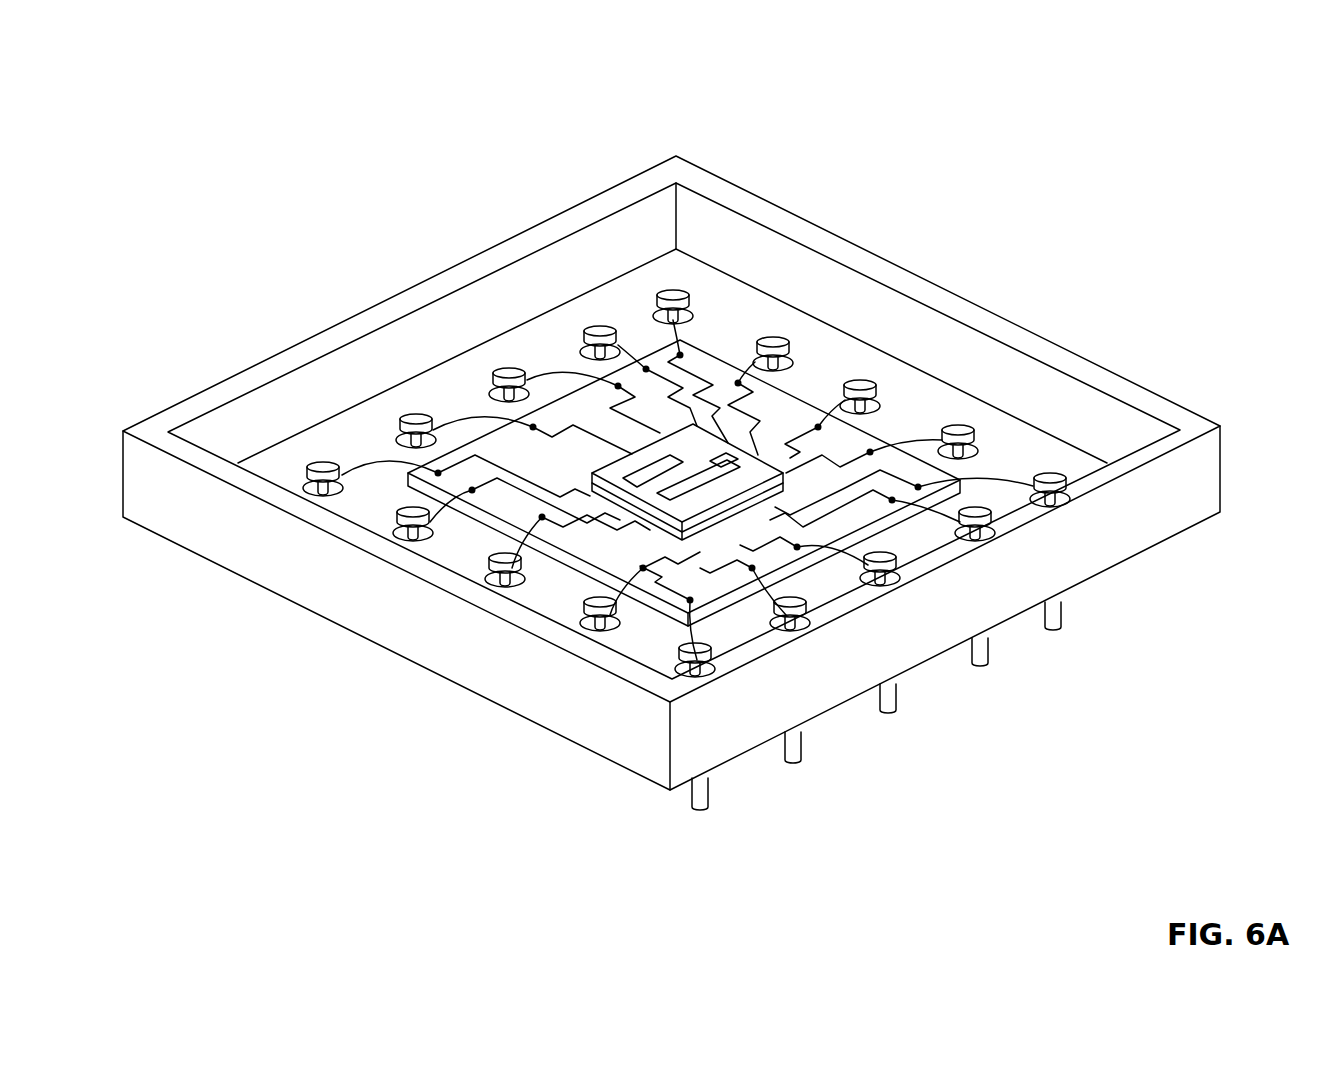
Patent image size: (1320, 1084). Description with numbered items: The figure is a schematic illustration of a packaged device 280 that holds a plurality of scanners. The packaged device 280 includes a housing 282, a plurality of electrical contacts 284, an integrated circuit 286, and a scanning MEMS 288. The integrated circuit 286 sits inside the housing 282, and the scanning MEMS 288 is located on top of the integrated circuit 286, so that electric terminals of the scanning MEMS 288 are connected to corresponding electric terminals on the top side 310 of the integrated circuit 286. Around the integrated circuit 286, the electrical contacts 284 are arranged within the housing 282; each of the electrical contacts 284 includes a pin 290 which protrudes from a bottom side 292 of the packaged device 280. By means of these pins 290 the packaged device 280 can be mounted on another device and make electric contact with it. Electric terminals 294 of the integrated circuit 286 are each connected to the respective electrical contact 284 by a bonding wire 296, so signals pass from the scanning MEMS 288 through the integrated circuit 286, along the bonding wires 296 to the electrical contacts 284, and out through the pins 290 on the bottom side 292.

The packaged device 280 is at (385, 208).
The housing 282 is at (628, 180).
The electrical contacts 284 is at (603, 335).
The integrated circuit 286 is at (712, 350).
The scanning MEMS 288 is at (820, 423).
The pin 290 is at (888, 713).
The bottom side 292 is at (752, 793).
The electric terminals 294 is at (472, 492).
The bonding wire 296 is at (468, 415).
The top side 310 is at (490, 212).